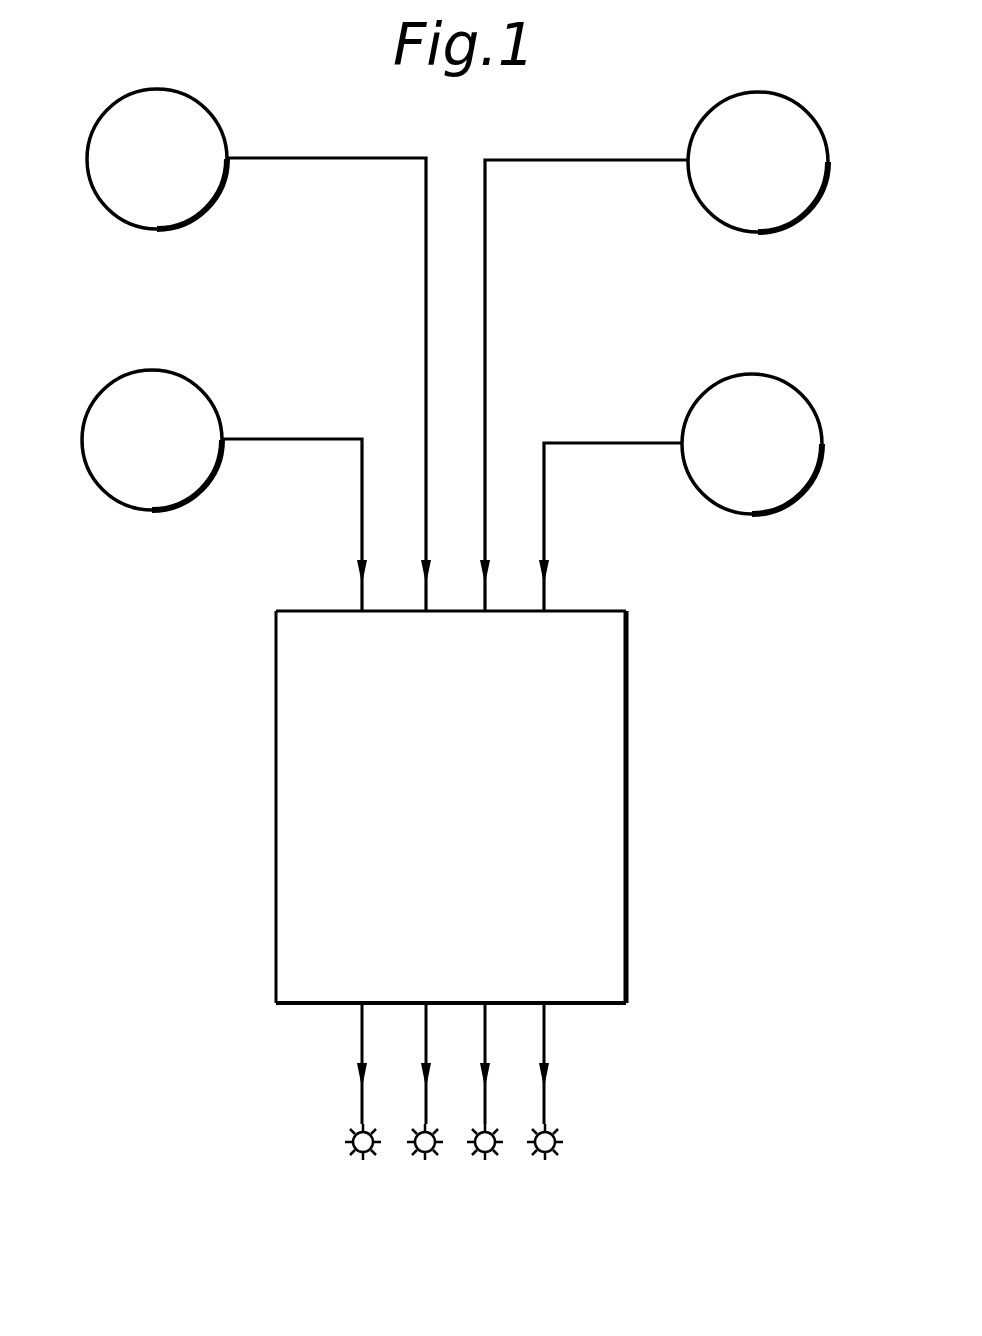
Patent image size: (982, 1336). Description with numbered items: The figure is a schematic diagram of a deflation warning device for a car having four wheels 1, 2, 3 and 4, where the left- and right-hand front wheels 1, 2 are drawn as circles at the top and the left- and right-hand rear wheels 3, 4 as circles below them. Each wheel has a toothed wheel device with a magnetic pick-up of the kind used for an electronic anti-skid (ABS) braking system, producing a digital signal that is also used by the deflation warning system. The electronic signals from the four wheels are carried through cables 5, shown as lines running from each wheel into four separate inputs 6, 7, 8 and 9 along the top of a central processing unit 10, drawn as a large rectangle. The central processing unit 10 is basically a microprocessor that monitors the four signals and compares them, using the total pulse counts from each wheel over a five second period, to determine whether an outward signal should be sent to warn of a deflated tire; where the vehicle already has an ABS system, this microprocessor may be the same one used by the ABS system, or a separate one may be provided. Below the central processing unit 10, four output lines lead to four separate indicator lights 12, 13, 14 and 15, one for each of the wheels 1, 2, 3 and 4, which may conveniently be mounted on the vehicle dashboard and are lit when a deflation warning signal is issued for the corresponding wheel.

The left-hand front wheel 1 is at (100, 163).
The right-hand front wheel 2 is at (814, 168).
The left-hand rear wheel 3 is at (95, 440).
The right-hand rear wheel 4 is at (805, 443).
The cables 5 is at (426, 400).
The input 6 is at (360, 608).
The input 7 is at (424, 608).
The input 8 is at (484, 608).
The input 9 is at (543, 608).
The central processing unit 10 is at (276, 760).
The indicator light 12 is at (367, 1162).
The indicator light 13 is at (430, 1162).
The indicator light 14 is at (490, 1162).
The indicator light 15 is at (551, 1162).